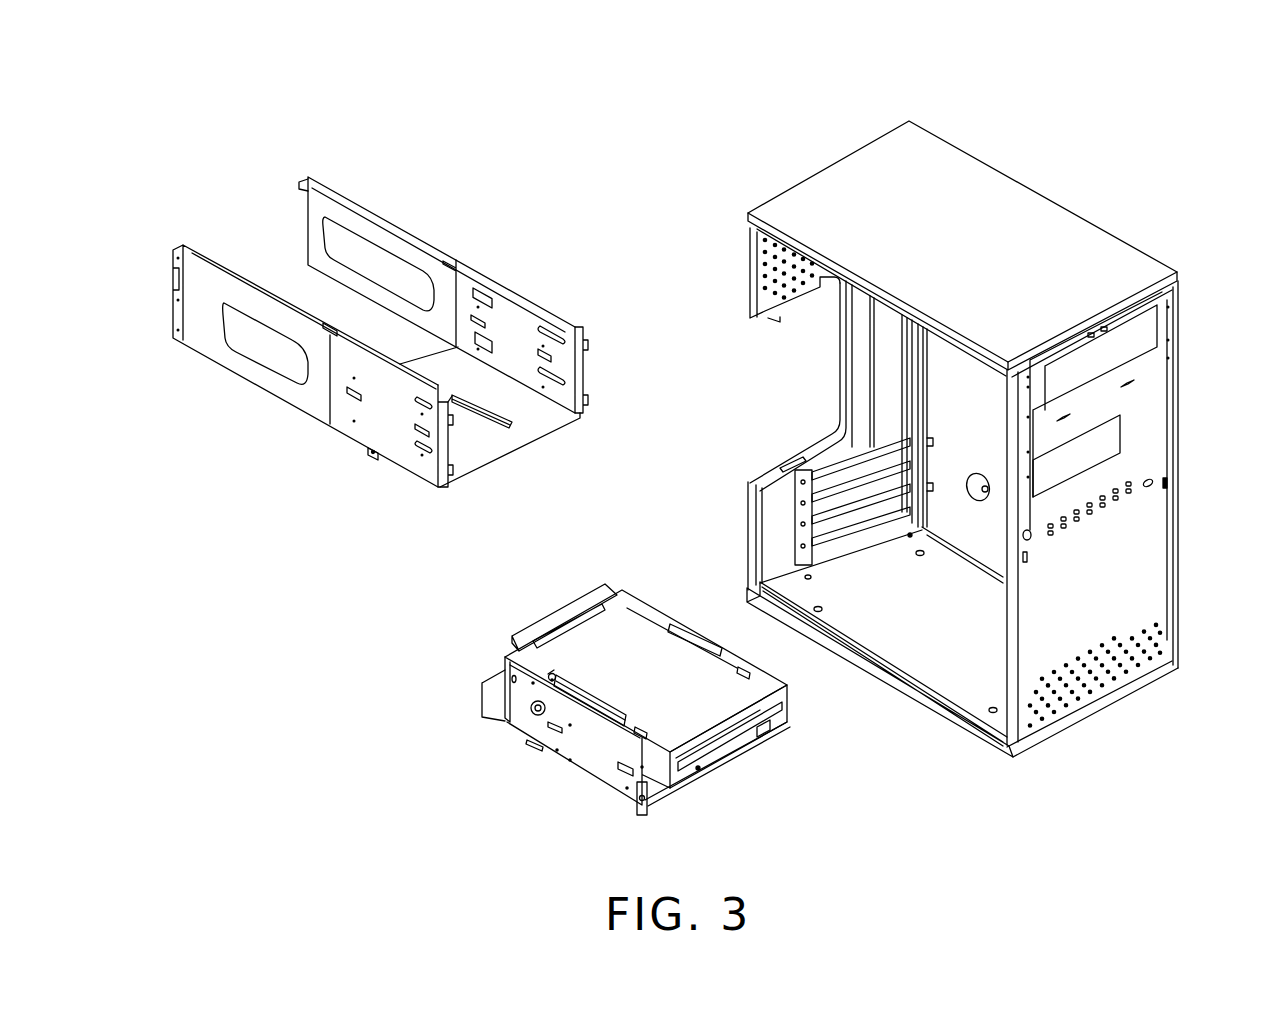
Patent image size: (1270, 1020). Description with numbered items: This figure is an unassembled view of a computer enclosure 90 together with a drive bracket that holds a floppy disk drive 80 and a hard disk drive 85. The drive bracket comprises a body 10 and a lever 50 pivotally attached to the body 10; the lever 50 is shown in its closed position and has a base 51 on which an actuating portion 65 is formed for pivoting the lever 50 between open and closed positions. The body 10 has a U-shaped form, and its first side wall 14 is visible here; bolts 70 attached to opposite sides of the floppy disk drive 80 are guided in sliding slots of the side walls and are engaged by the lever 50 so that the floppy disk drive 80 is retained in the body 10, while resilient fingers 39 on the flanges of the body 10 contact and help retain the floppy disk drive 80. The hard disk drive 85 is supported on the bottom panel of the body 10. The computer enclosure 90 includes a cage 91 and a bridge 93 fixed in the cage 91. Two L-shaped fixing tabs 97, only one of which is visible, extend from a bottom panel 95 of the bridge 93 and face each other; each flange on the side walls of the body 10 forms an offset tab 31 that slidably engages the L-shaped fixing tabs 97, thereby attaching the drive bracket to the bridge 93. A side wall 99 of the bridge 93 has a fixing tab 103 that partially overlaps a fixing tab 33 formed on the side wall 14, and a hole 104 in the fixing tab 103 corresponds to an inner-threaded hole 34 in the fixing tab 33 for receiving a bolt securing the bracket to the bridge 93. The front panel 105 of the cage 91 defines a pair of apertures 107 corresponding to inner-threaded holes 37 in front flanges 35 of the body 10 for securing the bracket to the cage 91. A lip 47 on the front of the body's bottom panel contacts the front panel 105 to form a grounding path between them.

The body 10 is at (608, 717).
The first side wall 14 is at (590, 762).
The offset tab 31 is at (688, 632).
The fixing tab 33 is at (577, 687).
The inner-threaded hole 34 is at (555, 673).
The front flange 35 is at (642, 817).
The inner-threaded hole 37 is at (646, 806).
The resilient finger 39 is at (744, 666).
The lip 47 is at (723, 768).
The lever 50 is at (628, 589).
The base 51 is at (522, 660).
The actuating portion 65 is at (570, 610).
The bolt 70 is at (526, 754).
The floppy disk drive 80 is at (760, 687).
The hard disk drive 85 is at (488, 706).
The computer enclosure 90 is at (697, 135).
The cage 91 is at (858, 136).
The bridge 93 is at (346, 155).
The bottom panel 95 is at (547, 421).
The L-shaped fixing tab 97 is at (490, 424).
The side wall 99 is at (310, 392).
The fixing tab 103 is at (365, 447).
The hole 104 is at (371, 452).
The front panel 105 is at (1128, 585).
The aperture 107 is at (1124, 425).